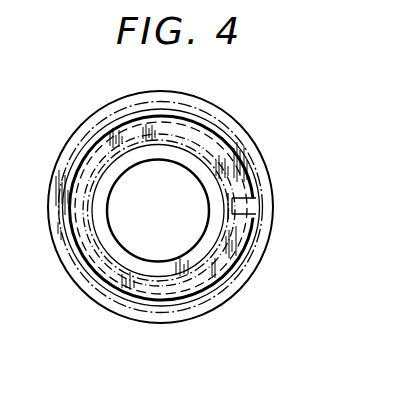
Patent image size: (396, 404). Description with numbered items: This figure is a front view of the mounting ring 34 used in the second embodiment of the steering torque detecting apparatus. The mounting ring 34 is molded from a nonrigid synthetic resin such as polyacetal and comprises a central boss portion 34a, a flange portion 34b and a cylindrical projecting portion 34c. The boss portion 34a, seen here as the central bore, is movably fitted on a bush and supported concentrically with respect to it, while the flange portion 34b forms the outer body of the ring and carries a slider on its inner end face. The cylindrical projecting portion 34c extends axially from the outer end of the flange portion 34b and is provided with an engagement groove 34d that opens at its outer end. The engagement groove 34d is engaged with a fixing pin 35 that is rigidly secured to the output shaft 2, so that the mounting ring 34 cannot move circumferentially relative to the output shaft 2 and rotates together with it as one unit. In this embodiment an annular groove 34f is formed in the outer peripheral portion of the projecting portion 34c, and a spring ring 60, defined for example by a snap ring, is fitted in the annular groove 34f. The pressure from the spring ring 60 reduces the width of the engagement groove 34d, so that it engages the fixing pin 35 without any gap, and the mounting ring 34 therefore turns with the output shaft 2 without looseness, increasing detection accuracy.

The mounting ring 34 is at (82, 97).
The boss portion 34a is at (110, 203).
The flange portion 34b is at (233, 289).
The cylindrical projecting portion 34c is at (163, 289).
The engagement groove 34d is at (234, 206).
The annular groove 34f is at (255, 256).
The fixing pin 35 is at (248, 207).
The spring ring 60 is at (243, 158).
The output shaft 2 is at (110, 262).